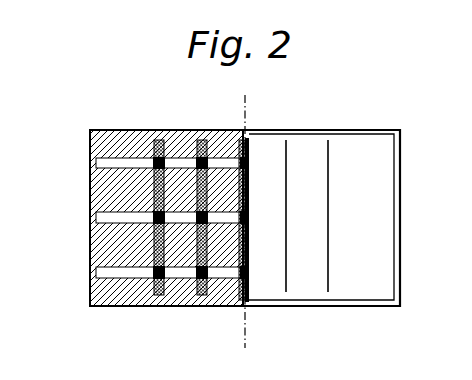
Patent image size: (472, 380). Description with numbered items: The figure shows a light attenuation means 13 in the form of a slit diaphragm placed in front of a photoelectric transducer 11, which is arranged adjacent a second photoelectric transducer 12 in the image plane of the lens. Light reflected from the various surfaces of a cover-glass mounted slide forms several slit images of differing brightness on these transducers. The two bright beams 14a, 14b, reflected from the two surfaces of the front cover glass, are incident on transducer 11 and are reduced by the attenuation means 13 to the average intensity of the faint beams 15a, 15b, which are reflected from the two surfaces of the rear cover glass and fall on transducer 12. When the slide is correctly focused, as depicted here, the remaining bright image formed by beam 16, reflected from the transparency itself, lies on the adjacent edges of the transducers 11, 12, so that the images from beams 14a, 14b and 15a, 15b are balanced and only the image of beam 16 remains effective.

The photoelectric transducer 11 is at (120, 166).
The photoelectric transducer 12 is at (361, 148).
The light attenuation means 13 is at (105, 292).
The beam 14a is at (160, 307).
The beam 14b is at (203, 307).
The beam 15a is at (287, 273).
The beam 15b is at (329, 273).
The beam 16 is at (249, 185).